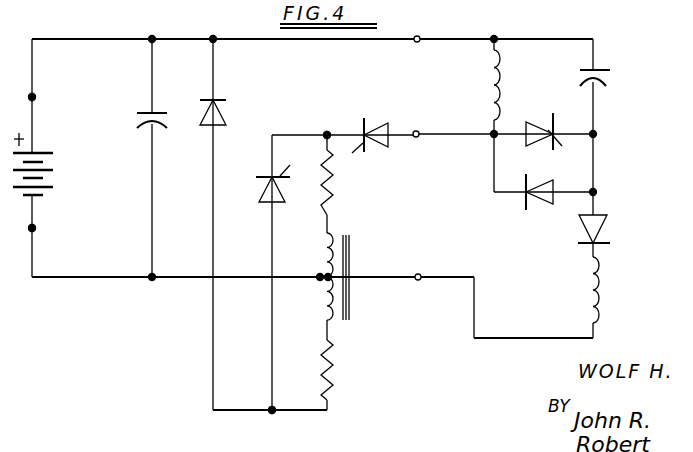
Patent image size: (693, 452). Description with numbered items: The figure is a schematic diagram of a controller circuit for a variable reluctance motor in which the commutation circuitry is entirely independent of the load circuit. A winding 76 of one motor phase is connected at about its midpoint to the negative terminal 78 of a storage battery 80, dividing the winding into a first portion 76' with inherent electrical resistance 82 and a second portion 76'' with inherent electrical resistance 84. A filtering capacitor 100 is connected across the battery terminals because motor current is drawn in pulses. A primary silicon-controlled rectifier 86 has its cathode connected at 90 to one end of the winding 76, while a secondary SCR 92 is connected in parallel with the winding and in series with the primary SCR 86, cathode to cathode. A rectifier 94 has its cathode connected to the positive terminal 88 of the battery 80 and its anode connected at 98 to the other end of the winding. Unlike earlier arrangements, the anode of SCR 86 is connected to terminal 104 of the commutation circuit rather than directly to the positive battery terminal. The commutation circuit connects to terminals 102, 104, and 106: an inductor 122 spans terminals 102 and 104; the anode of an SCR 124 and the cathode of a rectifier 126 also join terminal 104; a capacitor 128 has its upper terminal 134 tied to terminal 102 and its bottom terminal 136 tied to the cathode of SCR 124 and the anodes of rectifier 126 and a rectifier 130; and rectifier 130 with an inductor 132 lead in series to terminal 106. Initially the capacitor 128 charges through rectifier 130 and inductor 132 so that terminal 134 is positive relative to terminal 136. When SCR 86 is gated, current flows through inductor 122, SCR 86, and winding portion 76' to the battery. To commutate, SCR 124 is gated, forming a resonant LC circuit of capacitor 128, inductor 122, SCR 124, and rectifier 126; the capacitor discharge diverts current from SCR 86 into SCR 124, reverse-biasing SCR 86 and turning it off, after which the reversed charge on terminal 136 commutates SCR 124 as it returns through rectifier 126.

The winding 76 is at (347, 279).
The first portion of the winding 76' is at (364, 254).
The second portion of the winding 76'' is at (366, 298).
The negative terminal 78 is at (36, 228).
The storage battery 80 is at (58, 175).
The inherent electrical resistance 82 is at (332, 180).
The inherent electrical resistance 84 is at (333, 365).
The silicon-controlled rectifier 86 is at (370, 125).
The positive terminal 88 is at (36, 97).
The cathode connection 90 is at (327, 131).
The SCR 92 is at (262, 190).
The rectifier 94 is at (222, 108).
The anode connection 98 is at (269, 413).
The filtering capacitor 100 is at (140, 120).
The terminal 102 is at (420, 36).
The terminal 104 is at (416, 138).
The terminal 106 is at (421, 274).
The inductor 122 is at (486, 85).
The SCR 124 is at (538, 124).
The rectifier 126 is at (545, 205).
The capacitor 128 is at (635, 78).
The rectifier 130 is at (600, 230).
The inductor 132 is at (602, 292).
The upper terminal of the capacitor 134 is at (596, 66).
The bottom terminal of the capacitor 136 is at (598, 84).